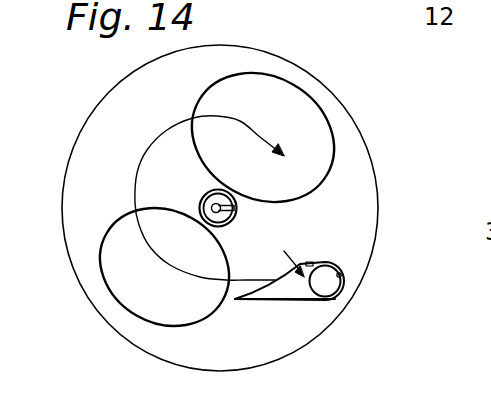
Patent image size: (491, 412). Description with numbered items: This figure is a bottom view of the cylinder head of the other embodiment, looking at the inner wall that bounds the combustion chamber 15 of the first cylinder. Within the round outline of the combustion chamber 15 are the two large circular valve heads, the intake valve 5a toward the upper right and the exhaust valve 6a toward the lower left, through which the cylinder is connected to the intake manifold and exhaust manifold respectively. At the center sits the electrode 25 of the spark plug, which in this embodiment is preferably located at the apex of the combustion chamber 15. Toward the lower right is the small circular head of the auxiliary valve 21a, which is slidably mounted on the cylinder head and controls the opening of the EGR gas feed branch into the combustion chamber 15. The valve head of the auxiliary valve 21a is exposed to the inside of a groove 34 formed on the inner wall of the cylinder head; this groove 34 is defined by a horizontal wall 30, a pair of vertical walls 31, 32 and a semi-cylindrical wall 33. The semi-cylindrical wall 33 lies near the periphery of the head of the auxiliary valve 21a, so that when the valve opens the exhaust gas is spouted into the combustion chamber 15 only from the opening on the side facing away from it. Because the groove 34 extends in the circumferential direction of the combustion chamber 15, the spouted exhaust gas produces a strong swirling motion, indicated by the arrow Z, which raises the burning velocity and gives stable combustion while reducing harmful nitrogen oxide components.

The combustion chamber 15 is at (68, 193).
The intake valve 5a is at (305, 103).
The exhaust valve 6a is at (118, 283).
The electrode 25 is at (205, 190).
The arrow Z is at (185, 125).
The horizontal wall 30 is at (297, 293).
The vertical wall 31 is at (311, 262).
The vertical wall 32 is at (273, 299).
The semi-cylindrical wall 33 is at (341, 274).
The auxiliary valve 21a is at (330, 289).
The groove 34 is at (286, 251).